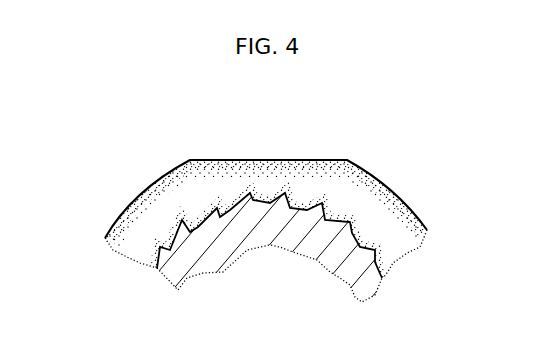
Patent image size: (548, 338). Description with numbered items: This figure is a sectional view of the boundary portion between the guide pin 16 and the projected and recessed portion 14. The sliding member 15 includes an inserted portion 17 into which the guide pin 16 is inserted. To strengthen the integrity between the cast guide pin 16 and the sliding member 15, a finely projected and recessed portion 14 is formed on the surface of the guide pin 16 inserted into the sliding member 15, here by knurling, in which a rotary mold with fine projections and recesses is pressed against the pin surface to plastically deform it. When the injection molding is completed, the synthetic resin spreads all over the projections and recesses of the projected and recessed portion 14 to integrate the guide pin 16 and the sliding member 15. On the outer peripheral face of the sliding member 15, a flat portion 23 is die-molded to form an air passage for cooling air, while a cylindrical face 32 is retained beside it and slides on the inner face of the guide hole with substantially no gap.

The projected and recessed portion 14 is at (216, 205).
The sliding member 15 is at (112, 219).
The guide pin 16 is at (354, 272).
The inserted portion 17 is at (168, 207).
The flat portion 23 is at (252, 160).
The cylindrical face 32 is at (398, 190).